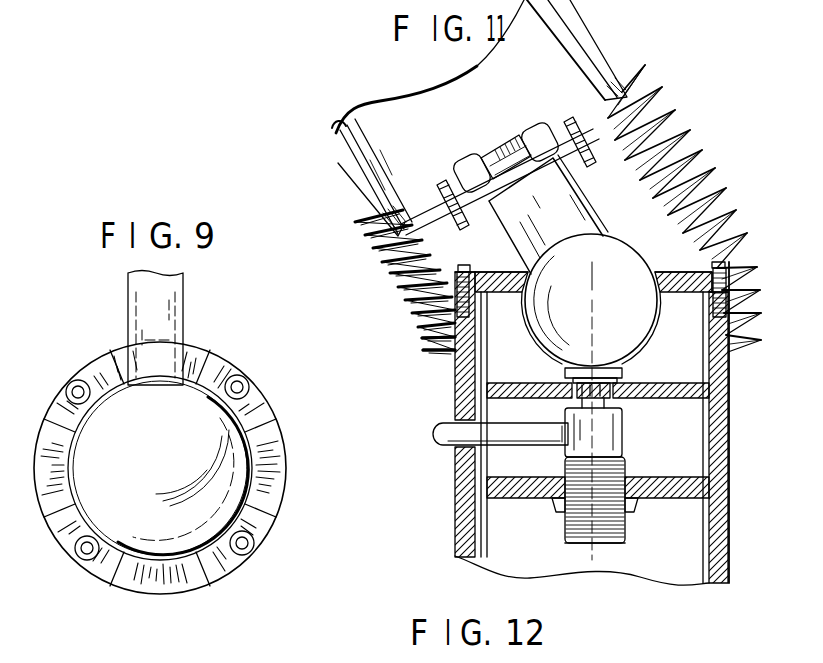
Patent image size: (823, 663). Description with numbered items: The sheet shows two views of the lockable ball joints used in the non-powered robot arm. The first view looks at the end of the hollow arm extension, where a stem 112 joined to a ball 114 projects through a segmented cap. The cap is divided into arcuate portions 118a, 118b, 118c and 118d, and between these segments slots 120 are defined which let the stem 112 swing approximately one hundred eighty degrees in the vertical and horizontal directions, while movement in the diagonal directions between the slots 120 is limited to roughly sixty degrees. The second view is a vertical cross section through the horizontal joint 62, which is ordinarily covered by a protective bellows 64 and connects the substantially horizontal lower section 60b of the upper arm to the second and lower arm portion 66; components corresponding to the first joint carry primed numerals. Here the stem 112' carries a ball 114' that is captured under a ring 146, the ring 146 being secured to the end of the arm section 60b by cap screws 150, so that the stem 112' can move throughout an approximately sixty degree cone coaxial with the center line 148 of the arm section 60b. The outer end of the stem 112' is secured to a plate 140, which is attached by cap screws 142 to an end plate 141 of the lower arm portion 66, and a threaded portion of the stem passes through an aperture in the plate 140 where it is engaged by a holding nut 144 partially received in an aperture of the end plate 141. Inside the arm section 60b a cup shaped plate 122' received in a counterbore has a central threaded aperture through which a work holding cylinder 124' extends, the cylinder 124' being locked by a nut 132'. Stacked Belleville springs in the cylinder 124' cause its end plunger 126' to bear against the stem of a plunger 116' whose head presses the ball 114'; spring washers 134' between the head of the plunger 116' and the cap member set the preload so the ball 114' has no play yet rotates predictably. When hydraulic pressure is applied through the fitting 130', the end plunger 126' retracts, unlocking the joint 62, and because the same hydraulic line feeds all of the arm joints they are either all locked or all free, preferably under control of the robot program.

In FIG. 9, the stem 112 is at (181, 328).
In FIG. 9, the ball 114 is at (218, 476).
In FIG. 9, the arcuate portion 118a is at (222, 372).
In FIG. 9, the arcuate portion 118b is at (262, 540).
In FIG. 9, the arcuate portion 118c is at (103, 563).
In FIG. 9, the arcuate portion 118d is at (100, 377).
In FIG. 9, the slots 120 is at (187, 353).
In FIG. 11, the substantially horizontal lower section 60b is at (731, 421).
In FIG. 11, the horizontal joint 62 is at (391, 308).
In FIG. 11, the bellows 64 is at (425, 342).
In FIG. 11, the second and lower arm portion 66 is at (355, 158).
In FIG. 11, the stem 112' is at (564, 214).
In FIG. 11, the ball 114' is at (611, 300).
In FIG. 11, the plunger 116' is at (624, 368).
In FIG. 11, the cup shaped plate 122' is at (598, 457).
In FIG. 11, the work holding cylinder 124' is at (626, 544).
In FIG. 11, the end plunger 126' is at (625, 429).
In FIG. 11, the fitting 130' is at (490, 457).
In FIG. 11, the nut 132' is at (572, 527).
In FIG. 11, the spring washers 134' is at (584, 335).
In FIG. 11, the plate 140 is at (440, 220).
In FIG. 11, the end plate 141 is at (617, 124).
In FIG. 11, the cap screws 142 is at (443, 183).
In FIG. 11, the holding nut 144 is at (540, 126).
In FIG. 11, the ring 146 is at (503, 296).
In FIG. 11, the center line 148 is at (600, 552).
In FIG. 11, the cap screws 150 is at (466, 265).